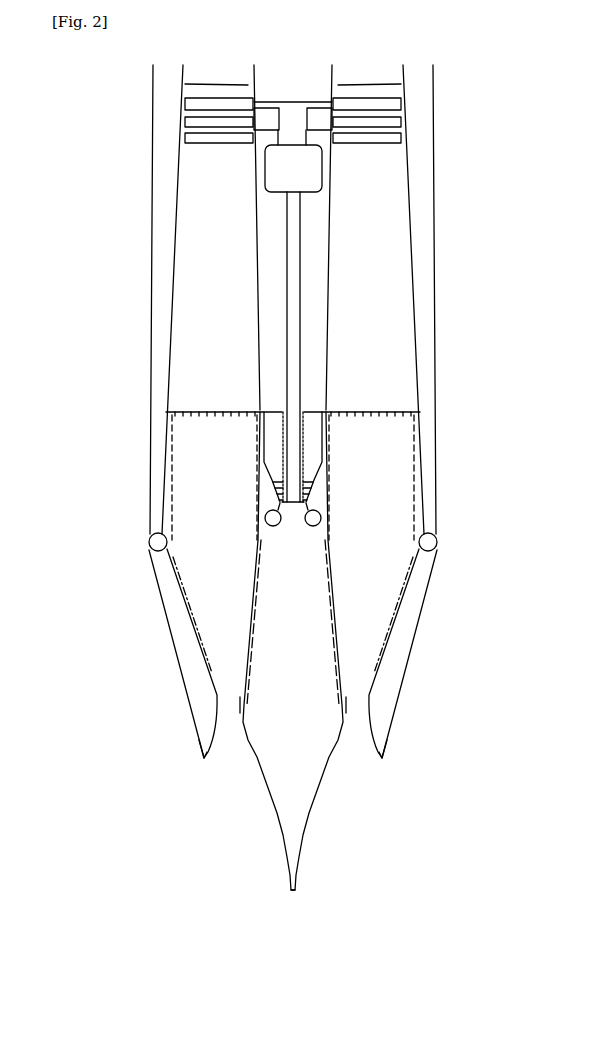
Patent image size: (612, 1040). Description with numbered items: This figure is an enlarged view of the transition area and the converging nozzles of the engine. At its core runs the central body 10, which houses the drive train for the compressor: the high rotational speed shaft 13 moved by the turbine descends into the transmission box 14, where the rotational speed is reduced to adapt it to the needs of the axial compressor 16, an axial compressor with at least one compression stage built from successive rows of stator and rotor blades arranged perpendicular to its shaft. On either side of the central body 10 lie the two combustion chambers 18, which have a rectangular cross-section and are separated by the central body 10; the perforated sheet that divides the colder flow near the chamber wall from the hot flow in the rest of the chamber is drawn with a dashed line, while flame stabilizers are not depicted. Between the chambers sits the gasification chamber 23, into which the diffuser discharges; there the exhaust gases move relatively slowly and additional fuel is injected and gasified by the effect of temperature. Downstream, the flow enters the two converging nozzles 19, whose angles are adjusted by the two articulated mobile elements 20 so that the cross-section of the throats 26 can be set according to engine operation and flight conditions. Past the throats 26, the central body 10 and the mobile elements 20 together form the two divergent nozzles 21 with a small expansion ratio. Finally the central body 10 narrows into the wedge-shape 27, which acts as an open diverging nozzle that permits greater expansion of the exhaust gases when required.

The central body 10 is at (289, 638).
The high rotational speed shaft 13 is at (293, 256).
The transmission box 14 is at (297, 168).
The axial compressor 16 is at (150, 80).
The combustion chambers 18 is at (205, 502).
The converging nozzles 19 is at (132, 712).
The articulated mobile elements 20 is at (175, 610).
The divergent nozzles 21 is at (180, 757).
The gasification chamber 23 is at (311, 436).
The throats 26 is at (228, 714).
The wedge-shape 27 is at (198, 760).